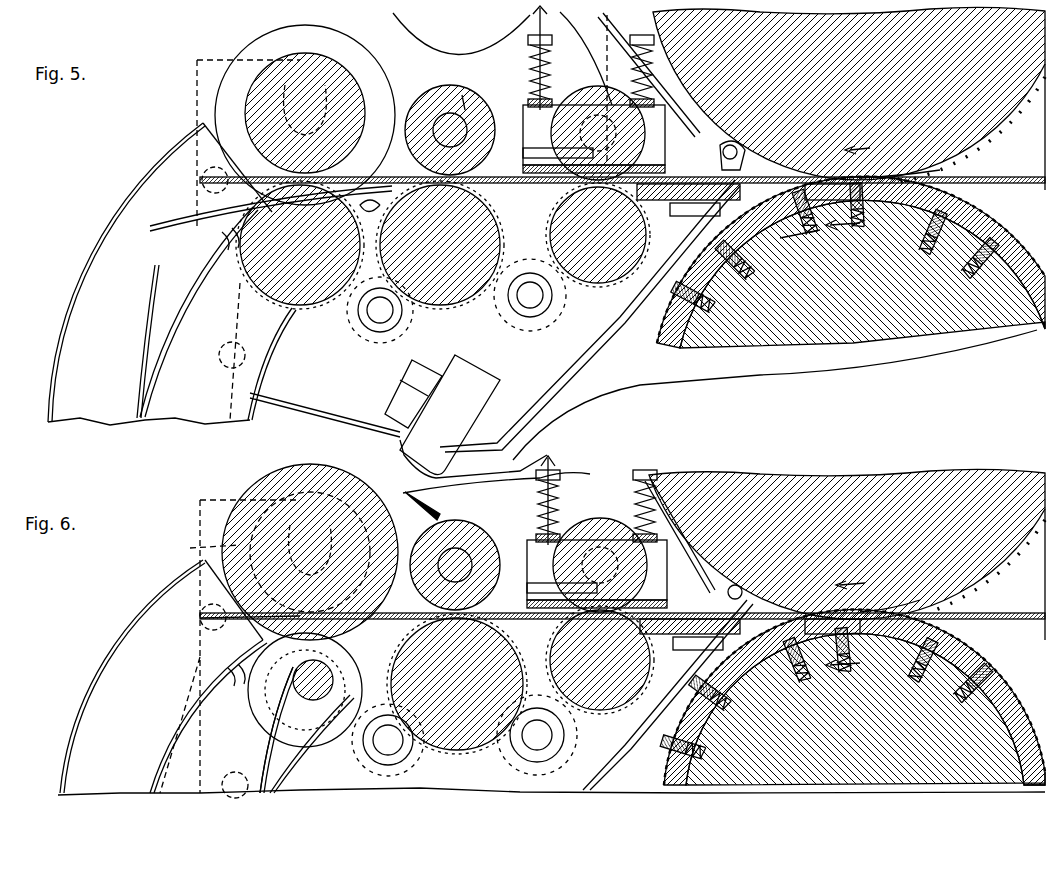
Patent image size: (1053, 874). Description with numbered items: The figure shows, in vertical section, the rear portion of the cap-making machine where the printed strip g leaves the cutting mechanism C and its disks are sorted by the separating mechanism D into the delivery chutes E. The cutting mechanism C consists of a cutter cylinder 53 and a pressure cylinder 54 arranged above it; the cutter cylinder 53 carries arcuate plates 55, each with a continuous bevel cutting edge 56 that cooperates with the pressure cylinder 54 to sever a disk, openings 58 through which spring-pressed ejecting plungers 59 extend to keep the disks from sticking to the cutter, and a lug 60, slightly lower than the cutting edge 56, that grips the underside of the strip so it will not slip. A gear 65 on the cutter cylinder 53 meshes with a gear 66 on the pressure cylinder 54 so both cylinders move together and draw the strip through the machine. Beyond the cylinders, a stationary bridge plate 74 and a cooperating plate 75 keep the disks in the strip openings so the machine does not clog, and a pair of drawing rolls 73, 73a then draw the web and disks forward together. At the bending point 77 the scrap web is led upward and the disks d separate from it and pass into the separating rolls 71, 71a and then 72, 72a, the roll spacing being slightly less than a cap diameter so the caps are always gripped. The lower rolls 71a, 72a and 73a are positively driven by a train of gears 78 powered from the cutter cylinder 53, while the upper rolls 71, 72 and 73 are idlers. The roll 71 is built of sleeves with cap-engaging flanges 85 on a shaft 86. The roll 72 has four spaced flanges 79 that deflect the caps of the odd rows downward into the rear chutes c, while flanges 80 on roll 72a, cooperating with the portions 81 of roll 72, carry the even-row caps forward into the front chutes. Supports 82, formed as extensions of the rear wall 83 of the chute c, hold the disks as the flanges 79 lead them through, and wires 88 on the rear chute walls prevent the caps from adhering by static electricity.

In FIG. 5, the cutter cylinder 53 is at (838, 272).
In FIG. 6, the cutter cylinder 53 is at (833, 704).
In FIG. 5, the pressure cylinder 54 is at (849, 98).
In FIG. 6, the pressure cylinder 54 is at (925, 492).
In FIG. 5, the arcuate plate 55 is at (940, 200).
In FIG. 6, the arcuate plate 55 is at (664, 758).
In FIG. 5, the cutting edge 56 is at (965, 212).
In FIG. 6, the cutting edge 56 is at (668, 730).
In FIG. 5, the openings 58 is at (797, 243).
In FIG. 6, the openings 58 is at (935, 606).
In FIG. 5, the spring-pressed ejecting plungers 59 is at (1000, 226).
In FIG. 6, the spring-pressed ejecting plungers 59 is at (950, 636).
In FIG. 5, the lug 60 is at (950, 170).
In FIG. 6, the lug 60 is at (1030, 700).
In FIG. 5, the gear 65 is at (1033, 234).
In FIG. 6, the gear 65 is at (1025, 640).
In FIG. 5, the gear 66 is at (972, 129).
In FIG. 6, the gear 66 is at (987, 566).
In FIG. 5, the separating roll 71 is at (457, 109).
In FIG. 6, the separating roll 71 is at (465, 555).
In FIG. 5, the separating roll 71a is at (442, 305).
In FIG. 6, the separating roll 71a is at (500, 752).
In FIG. 5, the separating roll 72 is at (340, 62).
In FIG. 6, the separating roll 72 is at (272, 498).
In FIG. 5, the separating roll 72a is at (326, 305).
In FIG. 6, the separating roll 72a is at (260, 700).
In FIG. 5, the drawing roll 73 is at (596, 88).
In FIG. 6, the drawing roll 73 is at (600, 526).
In FIG. 5, the drawing roll 73a is at (603, 282).
In FIG. 6, the drawing roll 73a is at (612, 712).
In FIG. 5, the bridge plate 74 is at (692, 220).
In FIG. 6, the bridge plate 74 is at (695, 655).
In FIG. 5, the plate 75 is at (686, 168).
In FIG. 6, the plate 75 is at (700, 602).
In FIG. 5, the bending point 77 is at (530, 152).
In FIG. 6, the bending point 77 is at (530, 590).
In FIG. 5, the train of gears 78 is at (440, 327).
In FIG. 6, the train of gears 78 is at (453, 752).
In FIG. 5, the cap-engaging flanges 79 is at (246, 56).
In FIG. 6, the cap-engaging flanges 79 is at (312, 468).
In FIG. 5, the circumferential flanges 80 is at (276, 300).
In FIG. 6, the circumferential flanges 80 is at (264, 728).
In FIG. 5, the portions of roll 72 81 is at (246, 100).
In FIG. 6, the portions of roll 72 81 is at (212, 590).
In FIG. 5, the supports 82 is at (386, 199).
In FIG. 6, the supports 82 is at (323, 680).
In FIG. 6, the rear wall 83 is at (310, 752).
In FIG. 5, the cap-engaging flanges 85 is at (462, 95).
In FIG. 6, the cap-engaging flanges 85 is at (440, 520).
In FIG. 5, the rod or shaft 86 is at (463, 124).
In FIG. 6, the rod or shaft 86 is at (458, 548).
In FIG. 5, the wires or raised surfaces 88 is at (195, 290).
In FIG. 6, the wires or raised surfaces 88 is at (196, 713).
In FIG. 5, the cutting mechanism C is at (1004, 154).
In FIG. 6, the cutting mechanism C is at (1024, 656).
In FIG. 5, the separating mechanism D is at (244, 32).
In FIG. 6, the separating mechanism D is at (394, 484).
In FIG. 5, the delivery chutes E is at (136, 274).
In FIG. 6, the delivery chutes E is at (540, 677).
In FIG. 5, the rear set of chutes c is at (138, 341).
In FIG. 6, the rear set of chutes c is at (161, 646).
In FIG. 5, the disks d is at (187, 212).
In FIG. 6, the disks d is at (410, 616).
In FIG. 5, the strip g is at (1020, 189).
In FIG. 6, the strip g is at (1005, 597).